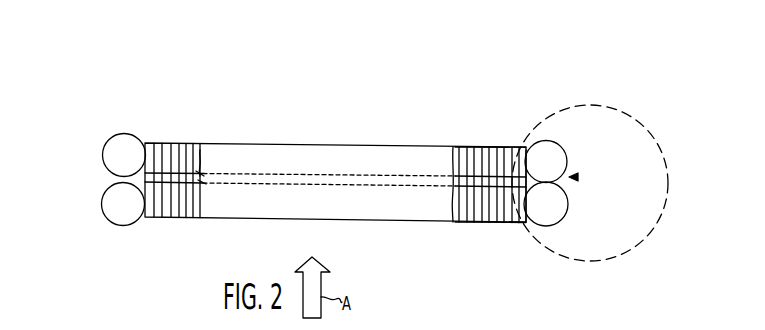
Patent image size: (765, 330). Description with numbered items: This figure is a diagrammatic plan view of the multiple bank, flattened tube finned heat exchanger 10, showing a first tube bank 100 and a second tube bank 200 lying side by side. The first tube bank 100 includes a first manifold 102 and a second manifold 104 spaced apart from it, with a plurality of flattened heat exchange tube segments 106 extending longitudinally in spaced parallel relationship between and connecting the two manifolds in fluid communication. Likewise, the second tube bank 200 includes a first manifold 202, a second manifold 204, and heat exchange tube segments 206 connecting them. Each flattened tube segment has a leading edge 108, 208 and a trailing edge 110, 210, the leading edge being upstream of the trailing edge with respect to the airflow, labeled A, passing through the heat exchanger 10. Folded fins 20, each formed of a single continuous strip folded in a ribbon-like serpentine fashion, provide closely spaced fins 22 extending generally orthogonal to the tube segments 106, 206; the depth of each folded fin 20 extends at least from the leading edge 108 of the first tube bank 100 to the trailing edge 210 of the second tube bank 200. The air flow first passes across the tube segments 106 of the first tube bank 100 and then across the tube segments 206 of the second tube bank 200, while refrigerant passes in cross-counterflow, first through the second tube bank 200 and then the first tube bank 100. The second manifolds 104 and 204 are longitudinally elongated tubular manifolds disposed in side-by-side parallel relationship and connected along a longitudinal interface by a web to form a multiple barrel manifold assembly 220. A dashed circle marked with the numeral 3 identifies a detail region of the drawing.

The flattened tube finned heat exchanger 10 is at (576, 85).
The folded fin 20 is at (180, 215).
The fins 22 is at (196, 160).
The first tube bank 100 is at (495, 236).
The first manifold 102 is at (117, 227).
The second manifold 104 is at (562, 221).
The heat exchange tube segments 106 is at (466, 227).
The leading edge 108 is at (364, 218).
The trailing edge 110 is at (203, 182).
The second tube bank 200 is at (514, 130).
The first manifold 202 is at (118, 134).
The second manifold 204 is at (566, 149).
The heat exchange tube segments 206 is at (488, 142).
The leading edge 208 is at (200, 173).
The trailing edge 210 is at (323, 144).
The manifold assembly 220 is at (574, 177).
The section line for FIG. 3 is at (633, 127).